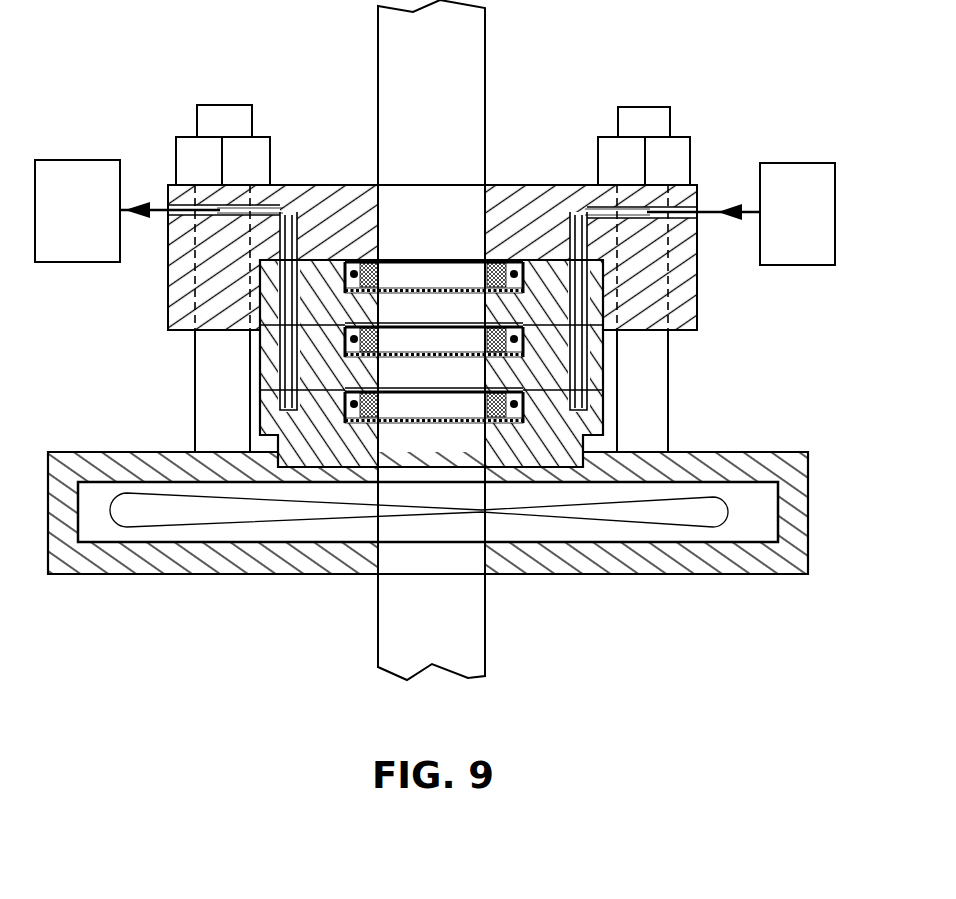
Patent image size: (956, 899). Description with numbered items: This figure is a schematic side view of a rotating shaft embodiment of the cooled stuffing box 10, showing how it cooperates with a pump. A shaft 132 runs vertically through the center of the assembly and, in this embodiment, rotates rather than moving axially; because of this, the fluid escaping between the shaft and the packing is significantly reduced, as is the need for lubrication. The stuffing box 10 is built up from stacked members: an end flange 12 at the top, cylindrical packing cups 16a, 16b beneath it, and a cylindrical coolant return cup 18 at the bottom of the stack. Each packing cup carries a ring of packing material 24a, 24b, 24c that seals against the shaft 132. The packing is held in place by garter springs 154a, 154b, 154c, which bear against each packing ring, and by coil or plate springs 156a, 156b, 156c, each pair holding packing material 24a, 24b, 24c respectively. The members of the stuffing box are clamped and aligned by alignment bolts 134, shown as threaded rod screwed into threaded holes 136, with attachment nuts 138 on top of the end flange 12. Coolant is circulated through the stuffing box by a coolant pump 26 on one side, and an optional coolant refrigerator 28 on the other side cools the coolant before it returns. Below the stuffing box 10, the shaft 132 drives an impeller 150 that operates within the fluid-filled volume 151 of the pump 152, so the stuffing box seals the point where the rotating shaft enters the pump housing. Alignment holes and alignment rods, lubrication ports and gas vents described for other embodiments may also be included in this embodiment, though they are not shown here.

The stuffing box 10 is at (352, 352).
The end flange 12 is at (700, 268).
The cylindrical packing cup 16a is at (305, 285).
The cylindrical packing cup 16b is at (272, 342).
The cylindrical coolant return cup 18 is at (543, 443).
The packing material 24a is at (370, 268).
The packing material 24b is at (368, 340).
The packing material 24c is at (365, 410).
The coolant pump 26 is at (812, 224).
The coolant refrigerator 28 is at (90, 221).
The shaft 132 is at (452, 112).
The alignment bolt 134 is at (670, 372).
The threaded hole 136 is at (670, 452).
The attachment nut 138 is at (675, 147).
The impeller 150 is at (715, 495).
The fluid-filled volume 151 is at (740, 527).
The pump 152 is at (157, 573).
The garter spring 154a is at (352, 266).
The garter spring 154b is at (353, 340).
The garter spring 154c is at (353, 404).
The coil or plate spring 156a is at (437, 291).
The coil or plate spring 156b is at (467, 355).
The coil or plate spring 156c is at (395, 421).